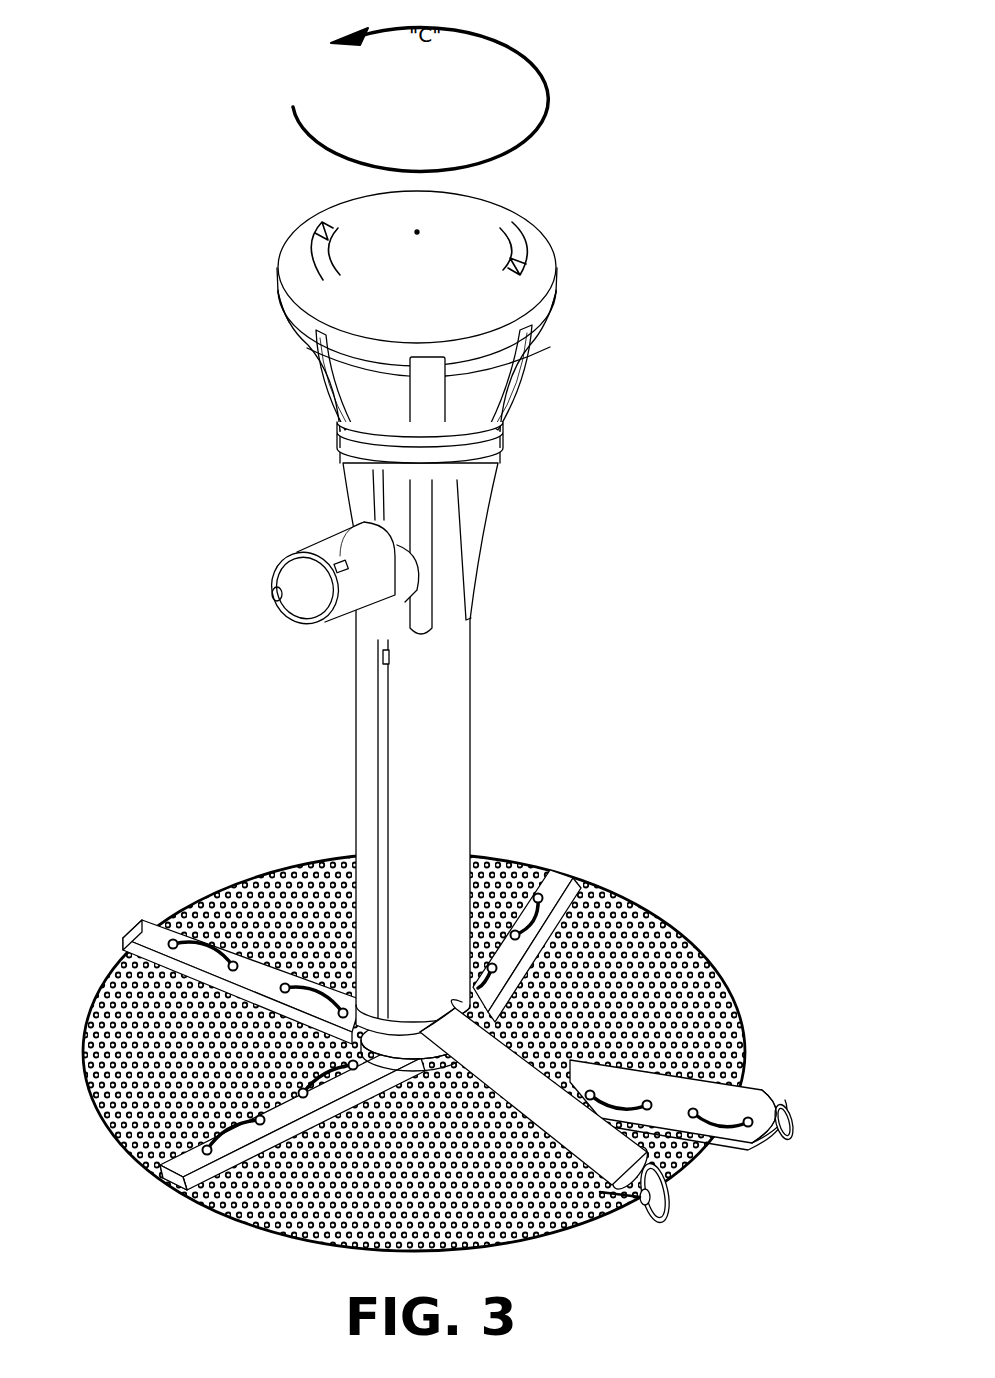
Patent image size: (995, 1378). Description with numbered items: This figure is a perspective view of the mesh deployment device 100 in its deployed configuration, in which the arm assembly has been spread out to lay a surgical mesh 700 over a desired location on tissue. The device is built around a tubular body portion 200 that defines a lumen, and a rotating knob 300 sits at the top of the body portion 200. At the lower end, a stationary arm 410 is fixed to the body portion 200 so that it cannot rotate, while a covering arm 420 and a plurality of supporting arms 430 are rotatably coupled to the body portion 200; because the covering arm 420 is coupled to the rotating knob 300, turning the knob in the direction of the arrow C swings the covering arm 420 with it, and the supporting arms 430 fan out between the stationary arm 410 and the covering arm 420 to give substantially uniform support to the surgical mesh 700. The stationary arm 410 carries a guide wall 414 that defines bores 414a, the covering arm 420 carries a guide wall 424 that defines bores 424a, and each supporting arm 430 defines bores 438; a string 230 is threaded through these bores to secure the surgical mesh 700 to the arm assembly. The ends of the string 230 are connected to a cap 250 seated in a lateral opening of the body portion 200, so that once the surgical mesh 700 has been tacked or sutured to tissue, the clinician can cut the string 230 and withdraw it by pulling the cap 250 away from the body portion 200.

The mesh deployment device 100 is at (673, 385).
The body portion 200 is at (448, 749).
The string 230 is at (208, 940).
The cap 250 is at (336, 614).
The rotating knob 300 is at (460, 327).
The stationary arm 410 is at (782, 1112).
The guide wall 414 is at (717, 1098).
The bores 414a is at (760, 1129).
The covering arm 420 is at (666, 1193).
The guide wall 424 is at (668, 1215).
The bores 424a is at (643, 1202).
The supporting arms 430 is at (556, 917).
The bores 438 is at (168, 1179).
The surgical mesh 700 is at (300, 1266).